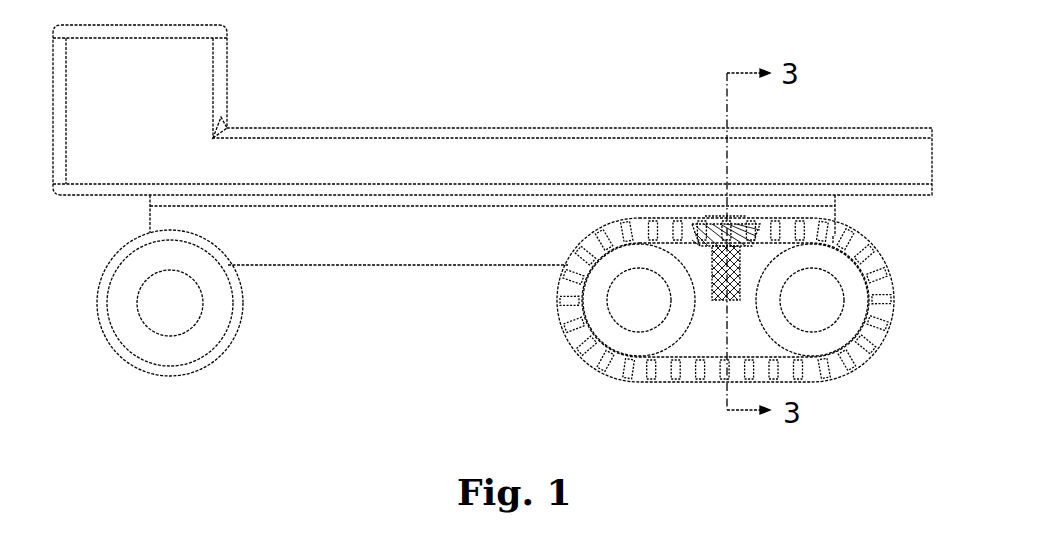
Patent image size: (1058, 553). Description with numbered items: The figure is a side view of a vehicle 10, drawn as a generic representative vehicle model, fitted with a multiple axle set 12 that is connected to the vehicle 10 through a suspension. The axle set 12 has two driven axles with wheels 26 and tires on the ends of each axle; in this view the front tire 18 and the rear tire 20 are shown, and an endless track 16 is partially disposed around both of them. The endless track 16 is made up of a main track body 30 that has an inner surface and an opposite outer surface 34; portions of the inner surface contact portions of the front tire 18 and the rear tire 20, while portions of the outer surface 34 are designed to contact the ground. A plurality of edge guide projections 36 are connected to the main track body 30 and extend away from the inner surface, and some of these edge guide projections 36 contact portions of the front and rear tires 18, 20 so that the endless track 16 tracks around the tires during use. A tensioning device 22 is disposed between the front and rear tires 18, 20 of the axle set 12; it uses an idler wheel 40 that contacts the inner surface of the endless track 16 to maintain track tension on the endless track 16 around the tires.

The vehicle 10 is at (434, 128).
The multiple axle set 12 is at (711, 253).
The endless track 16 is at (572, 293).
The front tire 18 is at (597, 313).
The rear tire 20 is at (847, 338).
The tensioning device 22 is at (735, 257).
The wheels 26 is at (618, 313).
The main track body 30 is at (860, 240).
The outer surface 34 is at (872, 359).
The edge guide projections 36 is at (873, 290).
The idler wheel 40 is at (722, 220).